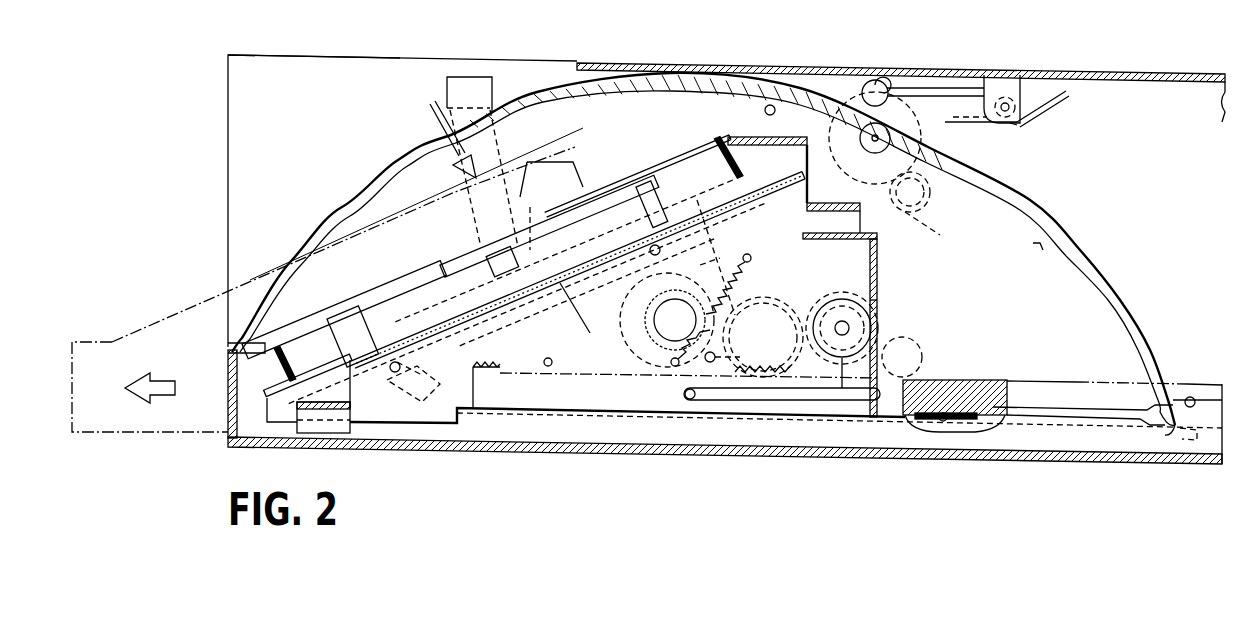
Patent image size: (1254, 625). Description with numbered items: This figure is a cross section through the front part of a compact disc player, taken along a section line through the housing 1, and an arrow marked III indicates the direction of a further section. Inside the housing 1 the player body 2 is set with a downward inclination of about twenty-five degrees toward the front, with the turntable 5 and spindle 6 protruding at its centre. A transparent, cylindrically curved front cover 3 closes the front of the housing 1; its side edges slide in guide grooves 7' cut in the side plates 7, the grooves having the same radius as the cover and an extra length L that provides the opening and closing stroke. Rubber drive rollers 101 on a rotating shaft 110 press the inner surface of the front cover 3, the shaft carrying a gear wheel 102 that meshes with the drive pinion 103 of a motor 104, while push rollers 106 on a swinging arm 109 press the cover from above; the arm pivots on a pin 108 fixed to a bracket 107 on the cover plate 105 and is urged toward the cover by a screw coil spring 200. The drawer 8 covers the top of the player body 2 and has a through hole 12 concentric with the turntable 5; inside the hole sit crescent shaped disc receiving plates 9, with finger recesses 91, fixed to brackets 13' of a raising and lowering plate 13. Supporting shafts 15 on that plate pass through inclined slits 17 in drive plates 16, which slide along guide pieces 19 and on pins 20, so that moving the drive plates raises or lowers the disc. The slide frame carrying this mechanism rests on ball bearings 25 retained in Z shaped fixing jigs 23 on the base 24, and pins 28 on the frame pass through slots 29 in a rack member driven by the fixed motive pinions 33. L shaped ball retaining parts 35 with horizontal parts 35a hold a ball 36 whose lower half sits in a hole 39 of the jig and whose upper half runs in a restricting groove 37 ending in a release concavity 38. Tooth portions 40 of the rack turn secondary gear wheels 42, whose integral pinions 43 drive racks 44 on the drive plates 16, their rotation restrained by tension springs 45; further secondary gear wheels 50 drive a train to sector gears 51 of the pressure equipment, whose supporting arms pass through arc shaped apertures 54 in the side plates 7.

The housing 1 is at (228, 148).
The player body 2 is at (705, 205).
The front cover 3 is at (398, 158).
The turntable 5 is at (590, 336).
The spindle 6 is at (501, 256).
The side plates 7 is at (314, 47).
The guide grooves 7' is at (1118, 311).
The drawer 8 is at (226, 375).
The disc receiving plates 9 is at (468, 271).
The through hole 12 is at (290, 353).
The raising and lowering plate 13 is at (601, 344).
The brackets 13' is at (666, 225).
The supporting shafts 15 is at (663, 253).
The drive plates 16 is at (727, 211).
The inclined slits 17 is at (722, 260).
The guide pieces 19 is at (327, 377).
The pins 20 is at (550, 358).
The fixing jigs 23 is at (806, 425).
The base 24 is at (590, 447).
The ball bearings 25 is at (633, 434).
The pins 28 is at (686, 402).
The slots 29 is at (770, 420).
The motive pinions 33 is at (920, 349).
The ball retaining parts 35 is at (967, 380).
The horizontal parts 35a is at (975, 422).
The ball 36 is at (945, 422).
The restricting grooves 37 is at (1075, 419).
The release concavity 38 is at (1158, 420).
The holes 39 is at (940, 420).
The tooth portions 40 is at (671, 362).
The secondary gear wheels 42 is at (731, 402).
The pinions 43 is at (640, 300).
The racks 44 is at (763, 337).
The tension springs 45 is at (749, 262).
The secondary gear wheels 50 is at (832, 400).
The sector gears 51 is at (882, 282).
The arc shaped apertures 54 is at (464, 88).
The recesses 91 is at (527, 222).
The rubber drive rollers 101 is at (873, 148).
The gear wheel 102 is at (950, 126).
The drive pinion 103 is at (931, 193).
The motor 104 is at (938, 216).
The cover plate 105 is at (930, 68).
The push rollers 106 is at (877, 80).
The bracket 107 is at (1052, 88).
The pin 108 is at (1017, 127).
The swinging arm 109 is at (962, 88).
The rotating shaft 110 is at (856, 102).
The screw coil spring 200 is at (986, 78).
The section arrow III is at (440, 124).
The extra length L is at (1033, 256).